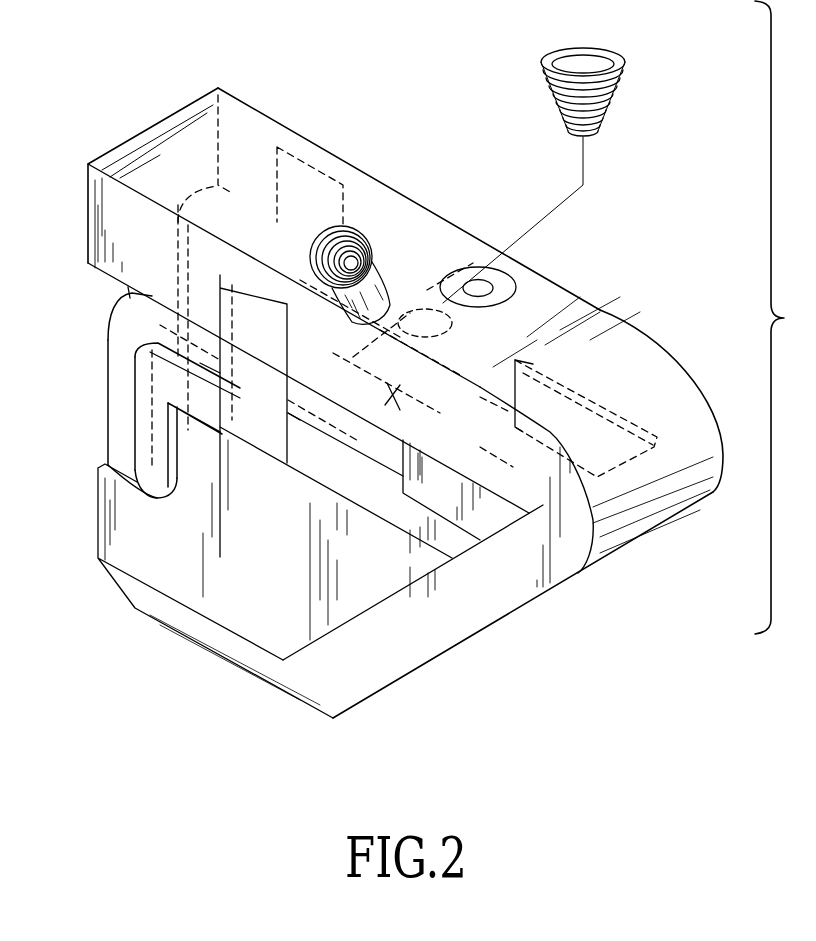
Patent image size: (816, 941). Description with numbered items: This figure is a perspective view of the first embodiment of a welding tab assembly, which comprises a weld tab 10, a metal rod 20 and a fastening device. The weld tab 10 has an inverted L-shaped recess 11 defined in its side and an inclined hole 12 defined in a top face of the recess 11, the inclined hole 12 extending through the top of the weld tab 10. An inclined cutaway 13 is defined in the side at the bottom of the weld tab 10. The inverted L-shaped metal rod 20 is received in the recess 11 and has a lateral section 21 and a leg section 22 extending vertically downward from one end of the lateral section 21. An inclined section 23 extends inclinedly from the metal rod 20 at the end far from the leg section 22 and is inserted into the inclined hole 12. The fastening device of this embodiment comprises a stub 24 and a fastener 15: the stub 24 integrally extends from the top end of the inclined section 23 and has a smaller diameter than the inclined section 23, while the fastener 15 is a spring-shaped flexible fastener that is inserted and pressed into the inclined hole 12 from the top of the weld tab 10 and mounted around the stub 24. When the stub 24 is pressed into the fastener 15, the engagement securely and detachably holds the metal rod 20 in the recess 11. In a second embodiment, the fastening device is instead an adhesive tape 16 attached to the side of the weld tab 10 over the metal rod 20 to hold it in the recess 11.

The weld tab 10 is at (643, 338).
The inverted L-shaped recess 11 is at (377, 460).
The inclined hole 12 is at (447, 277).
The inclined cutaway 13 is at (263, 663).
The fastener 15 is at (608, 57).
The adhesive tape 16 is at (267, 441).
The metal rod 20 is at (135, 392).
The lateral section 21 is at (306, 407).
The leg section 22 is at (118, 393).
The inclined section 23 is at (400, 410).
The stub 24 is at (482, 287).